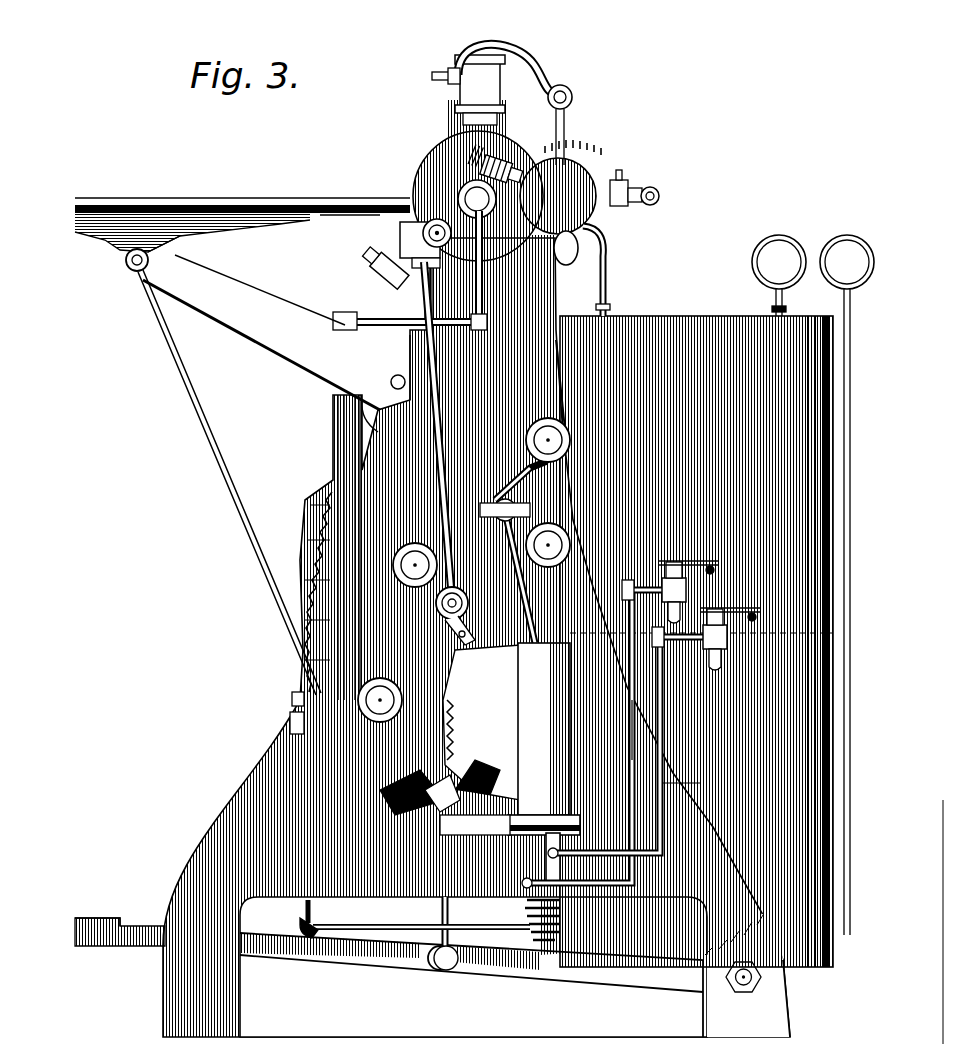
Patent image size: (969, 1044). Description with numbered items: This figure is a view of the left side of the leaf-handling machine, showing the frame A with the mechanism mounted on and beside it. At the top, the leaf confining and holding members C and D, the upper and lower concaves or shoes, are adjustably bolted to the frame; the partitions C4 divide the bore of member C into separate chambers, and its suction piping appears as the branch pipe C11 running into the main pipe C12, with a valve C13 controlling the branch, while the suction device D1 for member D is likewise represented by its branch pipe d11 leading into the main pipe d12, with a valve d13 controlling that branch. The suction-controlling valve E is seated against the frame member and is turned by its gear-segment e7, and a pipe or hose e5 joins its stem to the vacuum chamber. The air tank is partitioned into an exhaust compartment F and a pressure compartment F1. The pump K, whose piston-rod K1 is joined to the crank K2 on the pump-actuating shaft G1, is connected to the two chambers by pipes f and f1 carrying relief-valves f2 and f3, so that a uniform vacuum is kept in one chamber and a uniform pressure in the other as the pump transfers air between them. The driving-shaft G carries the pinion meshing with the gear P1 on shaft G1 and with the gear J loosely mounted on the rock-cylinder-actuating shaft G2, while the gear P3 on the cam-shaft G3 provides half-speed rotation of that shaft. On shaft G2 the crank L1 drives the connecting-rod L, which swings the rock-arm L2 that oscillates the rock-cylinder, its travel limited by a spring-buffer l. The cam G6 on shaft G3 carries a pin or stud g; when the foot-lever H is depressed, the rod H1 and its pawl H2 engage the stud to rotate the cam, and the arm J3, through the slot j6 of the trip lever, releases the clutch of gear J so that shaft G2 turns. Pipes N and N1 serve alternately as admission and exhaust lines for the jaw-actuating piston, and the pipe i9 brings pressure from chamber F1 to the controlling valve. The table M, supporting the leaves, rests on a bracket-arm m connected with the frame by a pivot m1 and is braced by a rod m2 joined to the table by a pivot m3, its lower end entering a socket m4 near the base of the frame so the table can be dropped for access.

The frame A is at (222, 832).
The leaf confining and holding member C is at (450, 120).
The cylinder connection block C4 is at (500, 849).
The pipe C11 is at (493, 48).
The pipe elbow C12 is at (568, 91).
The cylinder cock C13 is at (446, 75).
The leaf confining and holding member D is at (400, 240).
The suction device D1 is at (398, 250).
The valve fitting d is at (372, 290).
The branch pipe d11 is at (590, 247).
The main pipe d12 is at (660, 198).
The valve d13 is at (620, 178).
The suction-controlling valve E is at (582, 157).
The pipe or hose e5 is at (580, 252).
The gear-segment e7 is at (600, 156).
The exhaust compartment F is at (717, 601).
The pressure compartment F1 is at (680, 757).
The pipe f is at (628, 732).
The pipe f1 is at (668, 712).
The relief-valve f2 is at (670, 576).
The relief-valve f3 is at (708, 662).
The driving-shaft G is at (550, 545).
The pump-actuating shaft G1 is at (546, 440).
The rock-cylinder-actuating shaft G2 is at (412, 563).
The cam-shaft G3 is at (382, 716).
The cam G6 is at (462, 725).
The pin or stud g is at (458, 674).
The foot-lever H is at (357, 958).
The rod H1 is at (443, 900).
The pawl H2 is at (448, 645).
The pipe i9 is at (440, 930).
The gear J is at (322, 530).
The arm J3 is at (403, 826).
The slot j6 is at (382, 798).
The pump K is at (544, 739).
The piston-rod K1 is at (528, 602).
The crank K2 is at (540, 485).
The connecting-rod L is at (445, 397).
The crank L1 is at (432, 603).
The rock-arm L2 is at (457, 217).
The spring-buffer l is at (505, 150).
The table M is at (242, 209).
The bracket-arm m is at (261, 323).
The pivot m1 is at (392, 378).
The rod m2 is at (237, 496).
The pivot m3 is at (130, 272).
The socket m4 is at (295, 728).
The pipe N is at (334, 416).
The pipe N1 is at (478, 328).
The gear P1 is at (566, 388).
The gear P3 is at (294, 700).